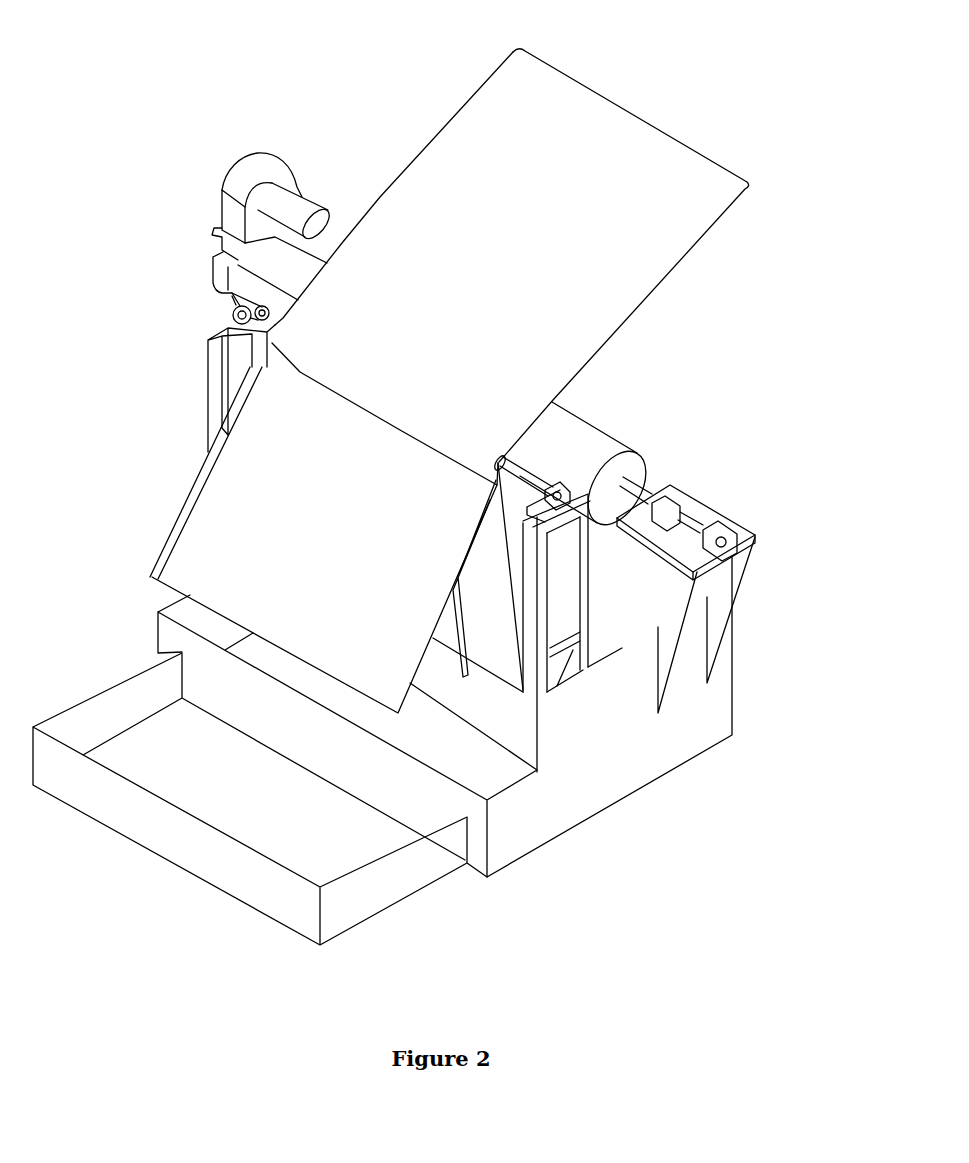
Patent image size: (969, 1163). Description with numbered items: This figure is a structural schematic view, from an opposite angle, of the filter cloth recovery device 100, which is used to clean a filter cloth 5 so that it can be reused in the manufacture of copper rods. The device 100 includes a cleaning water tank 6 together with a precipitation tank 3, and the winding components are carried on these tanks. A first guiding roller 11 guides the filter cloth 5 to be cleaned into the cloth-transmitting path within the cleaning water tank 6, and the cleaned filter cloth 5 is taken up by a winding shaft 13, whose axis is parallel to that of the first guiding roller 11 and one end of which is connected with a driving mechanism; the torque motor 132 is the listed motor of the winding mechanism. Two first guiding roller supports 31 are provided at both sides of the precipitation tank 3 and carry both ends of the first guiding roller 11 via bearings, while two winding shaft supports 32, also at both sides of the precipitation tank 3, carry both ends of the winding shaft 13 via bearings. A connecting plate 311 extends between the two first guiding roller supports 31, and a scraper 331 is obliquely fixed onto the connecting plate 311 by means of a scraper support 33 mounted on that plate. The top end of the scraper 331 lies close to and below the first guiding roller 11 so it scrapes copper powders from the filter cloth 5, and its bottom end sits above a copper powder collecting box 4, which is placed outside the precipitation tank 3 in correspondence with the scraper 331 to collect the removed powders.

The filter cloth recovery device 100 is at (193, 136).
The torque motor 132 is at (260, 265).
The first guiding roller 11 is at (247, 320).
The scraper 331 is at (225, 520).
The filter cloth 5 is at (655, 225).
The winding shaft 13 is at (695, 520).
The winding shaft support 32 is at (688, 585).
The first guiding roller support 31 is at (580, 632).
The cleaning water tank 6 is at (513, 681).
The precipitation tank 3 is at (838, 585).
The copper powder collecting box 4 is at (343, 921).
The scraper support 33 is at (463, 640).
The connecting plate 311 is at (507, 698).